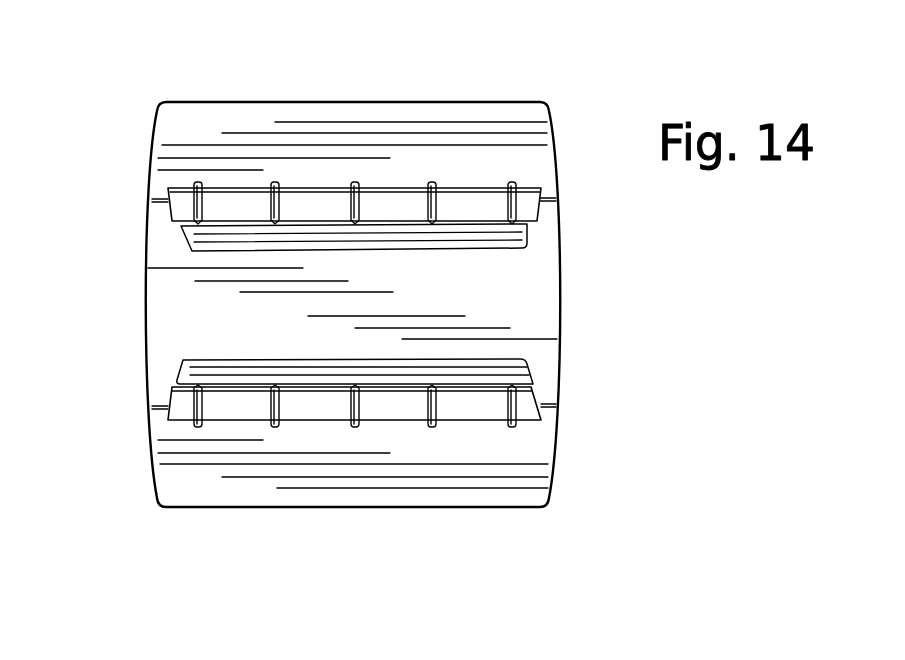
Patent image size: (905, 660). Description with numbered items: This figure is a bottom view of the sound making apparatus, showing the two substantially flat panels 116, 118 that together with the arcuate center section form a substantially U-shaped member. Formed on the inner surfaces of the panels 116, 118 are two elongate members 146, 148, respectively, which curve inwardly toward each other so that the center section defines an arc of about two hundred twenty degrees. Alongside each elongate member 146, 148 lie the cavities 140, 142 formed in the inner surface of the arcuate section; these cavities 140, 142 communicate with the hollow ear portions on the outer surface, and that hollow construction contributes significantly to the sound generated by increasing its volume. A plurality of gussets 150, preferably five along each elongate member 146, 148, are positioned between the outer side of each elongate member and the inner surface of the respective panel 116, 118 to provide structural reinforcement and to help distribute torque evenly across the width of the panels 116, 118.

The flat panel 116 is at (468, 112).
The flat panel 118 is at (507, 482).
The cavity 140 is at (210, 233).
The cavity 142 is at (520, 366).
The elongate member 146 is at (240, 203).
The elongate member 148 is at (230, 407).
The gussets 150 is at (432, 220).